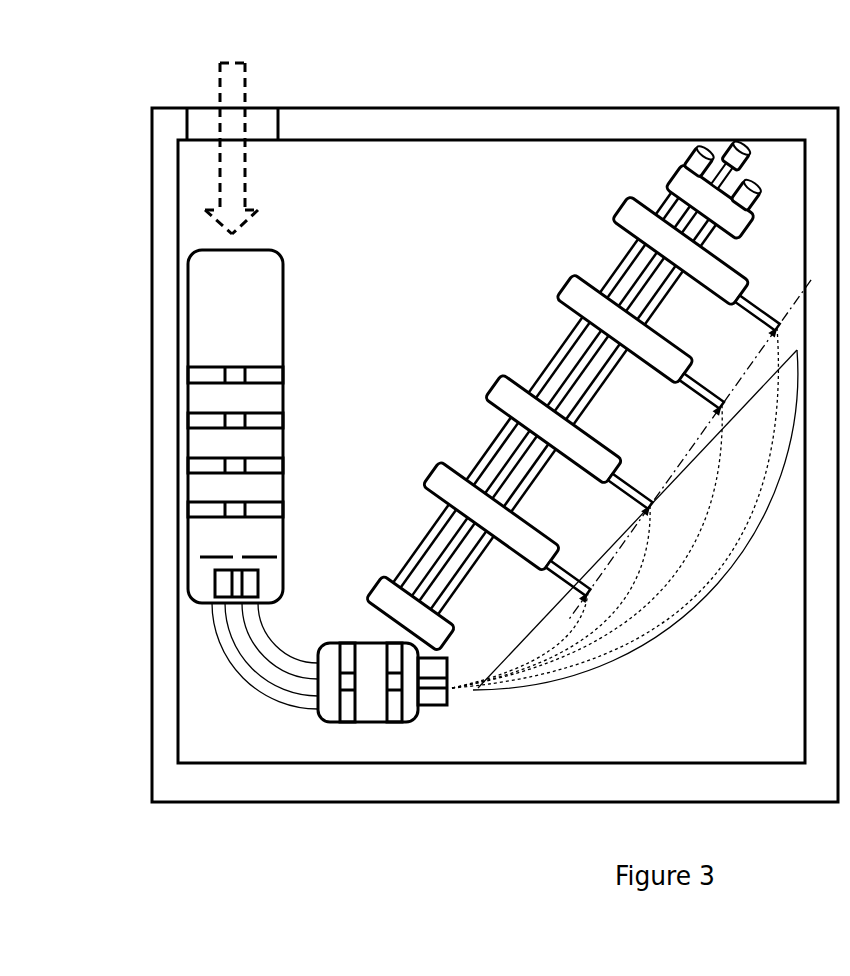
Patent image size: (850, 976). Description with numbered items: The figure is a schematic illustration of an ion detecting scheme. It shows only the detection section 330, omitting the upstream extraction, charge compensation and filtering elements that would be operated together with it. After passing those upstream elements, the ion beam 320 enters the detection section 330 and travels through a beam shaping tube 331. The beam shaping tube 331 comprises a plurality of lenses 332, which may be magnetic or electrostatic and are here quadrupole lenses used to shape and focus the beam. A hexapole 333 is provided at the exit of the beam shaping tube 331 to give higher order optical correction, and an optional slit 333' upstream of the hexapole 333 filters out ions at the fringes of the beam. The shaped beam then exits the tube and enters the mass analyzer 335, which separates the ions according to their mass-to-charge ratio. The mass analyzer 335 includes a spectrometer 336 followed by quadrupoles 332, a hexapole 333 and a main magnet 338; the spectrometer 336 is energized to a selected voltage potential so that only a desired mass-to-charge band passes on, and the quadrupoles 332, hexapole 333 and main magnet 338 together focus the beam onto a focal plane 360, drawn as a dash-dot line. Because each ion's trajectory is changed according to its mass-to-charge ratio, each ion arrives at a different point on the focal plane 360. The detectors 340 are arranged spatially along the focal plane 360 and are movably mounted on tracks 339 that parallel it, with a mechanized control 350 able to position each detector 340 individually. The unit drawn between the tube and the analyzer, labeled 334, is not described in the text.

The ion beam 320 is at (228, 64).
The detection section 330 is at (510, 107).
The beam shaping tube 331 is at (190, 282).
The lenses 332 is at (203, 500).
The hexapole 333 is at (302, 637).
The slit 333' is at (182, 524).
The transfer unit 334 is at (380, 652).
The mass analyzer 335 is at (682, 709).
The spectrometer 336 is at (270, 690).
The main magnet 338 is at (632, 652).
The tracks 339 is at (422, 548).
The detectors 340 is at (632, 205).
The mechanized control 350 is at (752, 187).
The focal plane 360 is at (698, 440).